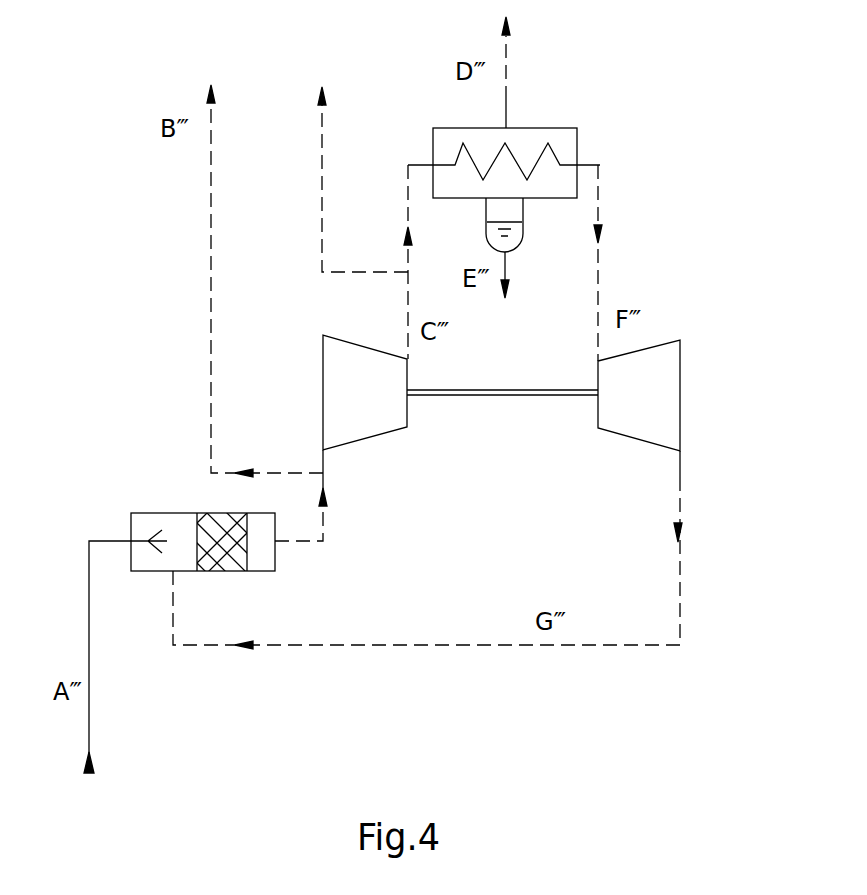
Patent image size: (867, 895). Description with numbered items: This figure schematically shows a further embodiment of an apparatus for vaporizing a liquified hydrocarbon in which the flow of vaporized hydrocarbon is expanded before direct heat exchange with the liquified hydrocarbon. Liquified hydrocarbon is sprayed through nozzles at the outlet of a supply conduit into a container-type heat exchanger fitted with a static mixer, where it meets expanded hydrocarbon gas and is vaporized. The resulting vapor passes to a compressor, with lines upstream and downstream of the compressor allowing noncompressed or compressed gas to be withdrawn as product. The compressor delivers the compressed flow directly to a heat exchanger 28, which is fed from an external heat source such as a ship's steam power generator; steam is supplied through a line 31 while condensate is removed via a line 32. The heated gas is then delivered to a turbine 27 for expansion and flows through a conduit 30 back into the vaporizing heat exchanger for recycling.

The turbine 27 is at (680, 403).
The heat exchanger 28 is at (577, 140).
The conduit 30 is at (480, 648).
The line 31 is at (508, 60).
The line 32 is at (506, 278).